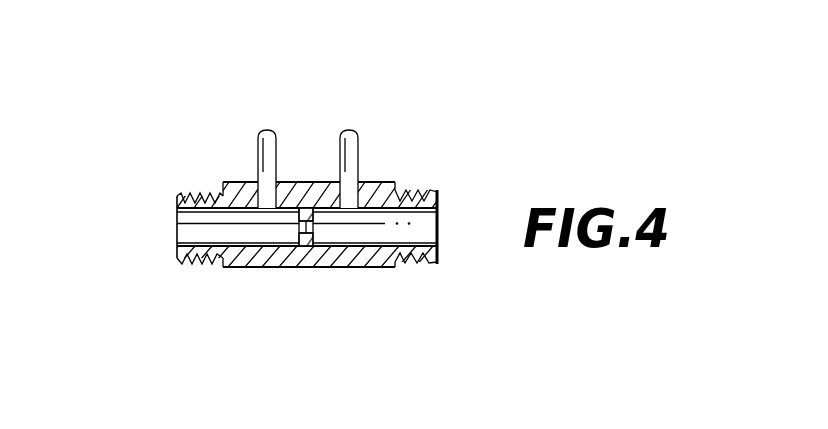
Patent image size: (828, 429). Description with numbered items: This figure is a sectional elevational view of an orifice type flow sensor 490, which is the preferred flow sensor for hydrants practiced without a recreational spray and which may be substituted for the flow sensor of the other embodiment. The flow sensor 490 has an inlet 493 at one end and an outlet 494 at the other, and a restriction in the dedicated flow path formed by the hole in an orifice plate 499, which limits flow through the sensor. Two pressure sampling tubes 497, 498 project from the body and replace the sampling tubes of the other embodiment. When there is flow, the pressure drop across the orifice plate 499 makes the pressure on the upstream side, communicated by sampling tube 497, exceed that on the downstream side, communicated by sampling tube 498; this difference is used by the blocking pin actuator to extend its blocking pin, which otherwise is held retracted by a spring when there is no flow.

The flow sensor 490 is at (383, 183).
The pressure sampling tube 497 is at (353, 129).
The pressure sampling tube 498 is at (258, 152).
The orifice plate 499 is at (312, 224).
The outlet 494 is at (188, 259).
The inlet 493 is at (417, 266).